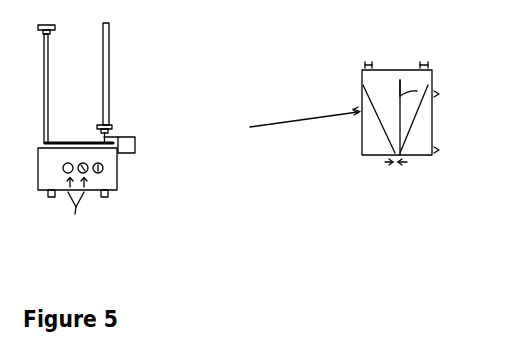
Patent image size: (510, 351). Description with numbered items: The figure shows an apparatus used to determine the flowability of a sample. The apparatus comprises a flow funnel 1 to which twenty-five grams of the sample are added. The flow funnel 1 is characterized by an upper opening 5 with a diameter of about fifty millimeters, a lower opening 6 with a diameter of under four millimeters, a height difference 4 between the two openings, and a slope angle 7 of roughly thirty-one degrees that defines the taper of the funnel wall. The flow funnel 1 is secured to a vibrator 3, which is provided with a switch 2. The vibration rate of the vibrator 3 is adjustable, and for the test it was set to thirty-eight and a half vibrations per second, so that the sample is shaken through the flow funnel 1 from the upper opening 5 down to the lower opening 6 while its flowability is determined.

The flow funnel 1 is at (140, 143).
The switch 2 is at (110, 168).
The vibrator 3 is at (73, 216).
The height difference 4 is at (401, 112).
The upper opening 5 is at (396, 54).
The lower opening 6 is at (396, 184).
The slope angle 7 is at (420, 93).